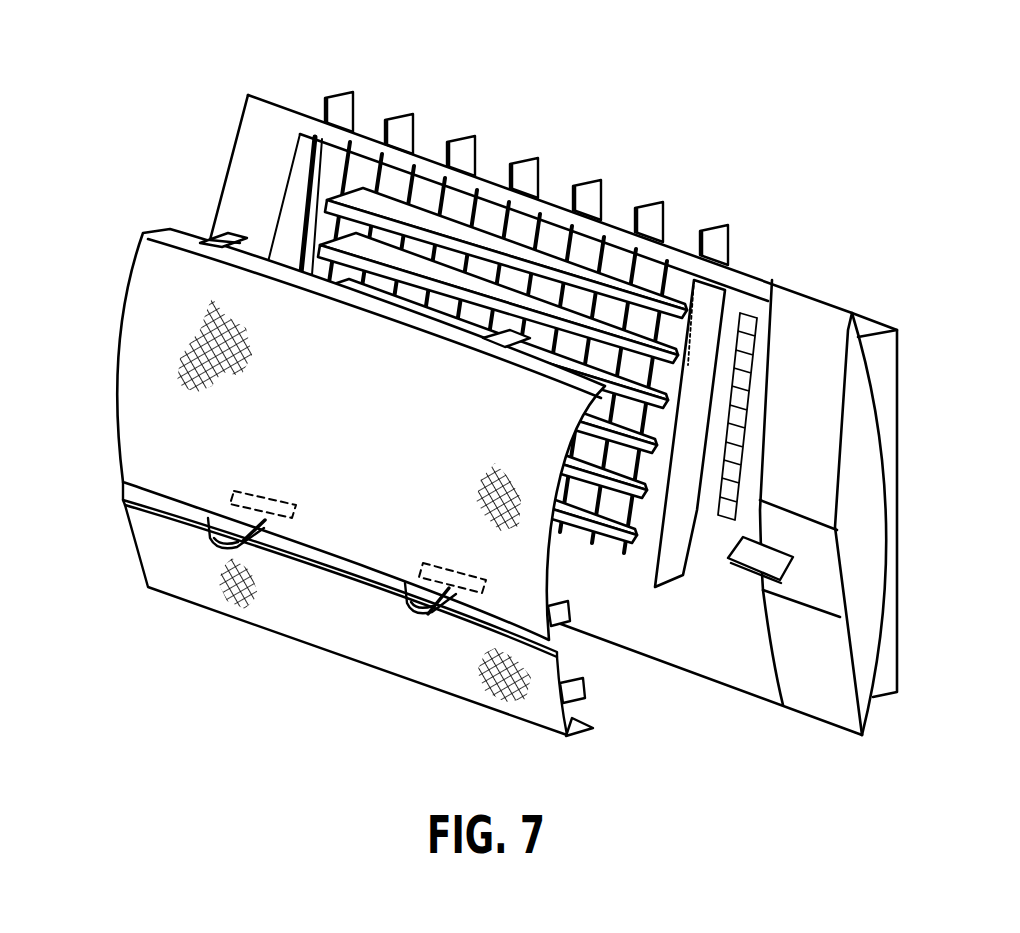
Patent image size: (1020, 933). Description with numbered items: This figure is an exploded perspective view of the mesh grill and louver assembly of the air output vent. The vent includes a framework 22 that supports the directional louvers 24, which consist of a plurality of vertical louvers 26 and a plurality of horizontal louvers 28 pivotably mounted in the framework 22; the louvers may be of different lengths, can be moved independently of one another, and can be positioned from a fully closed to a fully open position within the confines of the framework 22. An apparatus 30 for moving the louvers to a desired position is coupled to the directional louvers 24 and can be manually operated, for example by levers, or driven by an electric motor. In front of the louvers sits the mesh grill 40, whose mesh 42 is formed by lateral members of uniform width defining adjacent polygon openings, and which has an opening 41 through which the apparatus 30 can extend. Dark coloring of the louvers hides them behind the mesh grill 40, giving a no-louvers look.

The framework 22 is at (298, 128).
The directional louvers 24 is at (292, 213).
The vertical louvers 26 is at (603, 203).
The horizontal louvers 28 is at (622, 512).
The apparatus to move the louvers 30 is at (212, 545).
The mesh grill 40 is at (113, 320).
The opening 41 is at (168, 512).
The mesh 42 is at (185, 396).